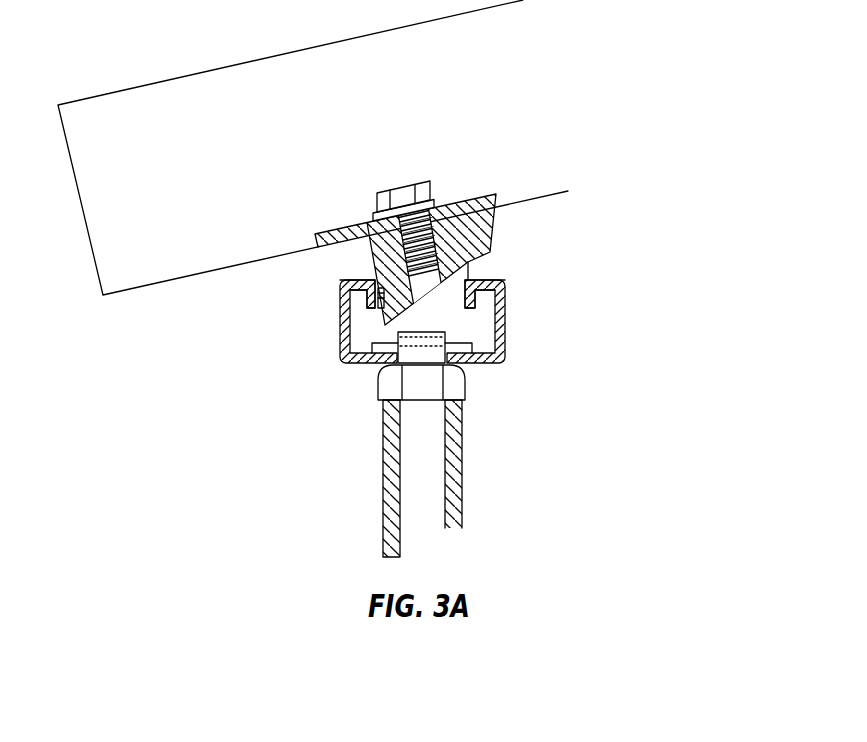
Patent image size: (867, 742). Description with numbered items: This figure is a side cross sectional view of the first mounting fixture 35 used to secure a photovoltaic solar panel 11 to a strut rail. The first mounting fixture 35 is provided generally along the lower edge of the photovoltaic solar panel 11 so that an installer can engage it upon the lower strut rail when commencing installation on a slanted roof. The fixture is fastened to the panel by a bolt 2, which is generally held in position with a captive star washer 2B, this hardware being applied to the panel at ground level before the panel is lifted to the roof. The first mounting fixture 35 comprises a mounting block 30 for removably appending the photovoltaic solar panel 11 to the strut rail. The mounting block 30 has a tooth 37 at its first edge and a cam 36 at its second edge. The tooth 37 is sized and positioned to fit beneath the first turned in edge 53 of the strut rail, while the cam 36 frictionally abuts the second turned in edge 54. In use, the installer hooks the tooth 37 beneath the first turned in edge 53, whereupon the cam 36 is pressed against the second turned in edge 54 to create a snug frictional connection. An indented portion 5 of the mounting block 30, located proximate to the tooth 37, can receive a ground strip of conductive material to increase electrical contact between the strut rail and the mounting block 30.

The photovoltaic solar panel 11 is at (92, 188).
The bolt 2 is at (420, 213).
The captive star washer 2B is at (433, 211).
The mounting block 30 is at (466, 226).
The cam 36 is at (468, 267).
The first mounting fixture 35 is at (362, 253).
The indented portion 5 is at (340, 279).
The first turned in edge 53 is at (380, 295).
The second turned in edge 54 is at (478, 300).
The tooth 37 is at (419, 333).